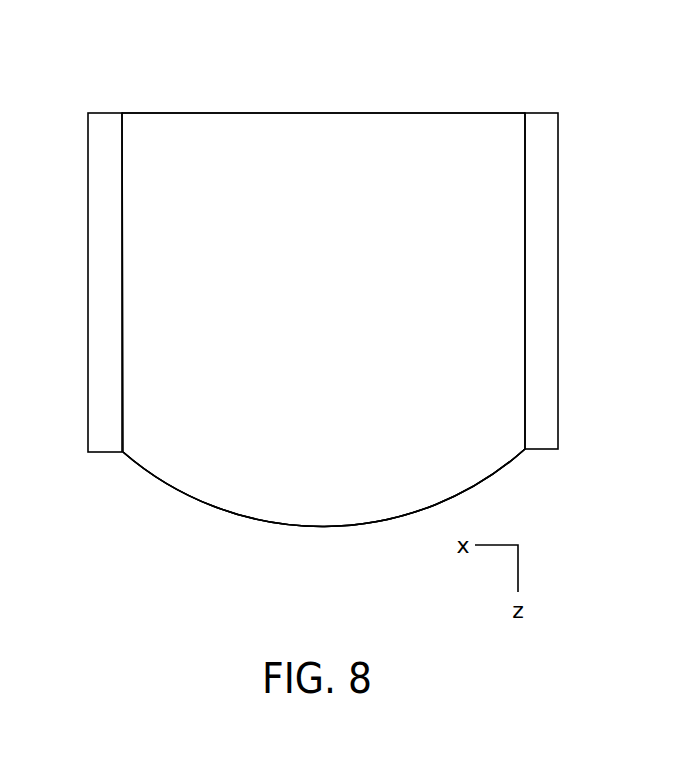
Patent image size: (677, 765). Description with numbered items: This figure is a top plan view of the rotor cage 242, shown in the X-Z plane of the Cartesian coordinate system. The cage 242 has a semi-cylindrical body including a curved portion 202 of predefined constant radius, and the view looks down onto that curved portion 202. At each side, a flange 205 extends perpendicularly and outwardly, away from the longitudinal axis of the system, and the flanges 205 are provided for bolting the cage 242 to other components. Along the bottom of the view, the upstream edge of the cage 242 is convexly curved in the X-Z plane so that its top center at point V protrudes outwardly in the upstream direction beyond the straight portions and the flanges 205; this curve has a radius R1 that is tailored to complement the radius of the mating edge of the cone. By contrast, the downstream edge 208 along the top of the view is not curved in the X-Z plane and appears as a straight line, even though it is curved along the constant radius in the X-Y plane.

The curved portion 202 is at (327, 207).
The downstream edge 208 is at (262, 113).
The flange 205 is at (545, 210).
The cage 242 is at (360, 359).
The radius of upstream edge R1 is at (221, 522).